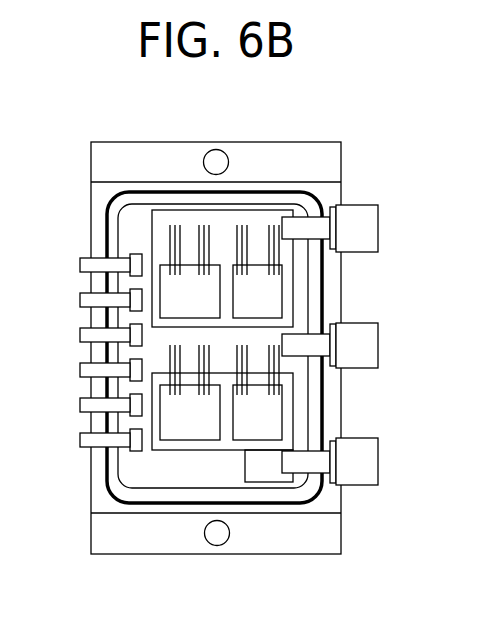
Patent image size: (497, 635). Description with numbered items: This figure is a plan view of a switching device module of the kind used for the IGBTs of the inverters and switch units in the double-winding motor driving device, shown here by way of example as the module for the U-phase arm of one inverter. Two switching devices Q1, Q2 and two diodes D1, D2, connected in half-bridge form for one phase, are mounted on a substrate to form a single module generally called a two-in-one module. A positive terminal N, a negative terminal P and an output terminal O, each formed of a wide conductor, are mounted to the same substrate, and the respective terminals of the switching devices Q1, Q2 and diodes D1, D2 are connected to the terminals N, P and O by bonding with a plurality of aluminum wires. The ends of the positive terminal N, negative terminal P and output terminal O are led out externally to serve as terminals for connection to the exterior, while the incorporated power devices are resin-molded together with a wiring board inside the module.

The switching device Q1 is at (183, 293).
The switching device Q2 is at (183, 424).
The diode D1 is at (266, 297).
The diode D2 is at (266, 419).
The positive terminal N is at (330, 228).
The output terminal O is at (330, 345).
The negative terminal P is at (330, 461).